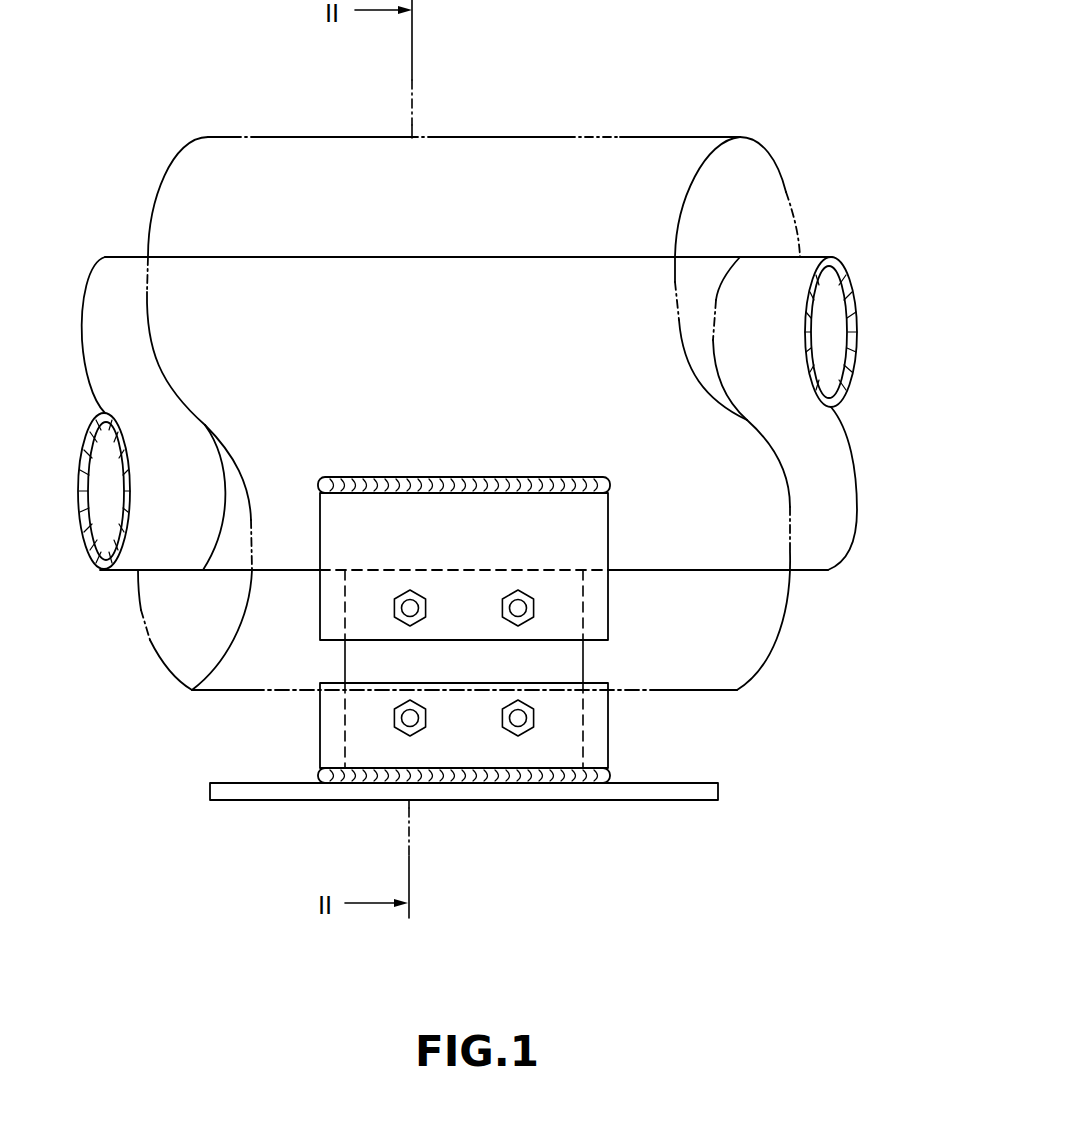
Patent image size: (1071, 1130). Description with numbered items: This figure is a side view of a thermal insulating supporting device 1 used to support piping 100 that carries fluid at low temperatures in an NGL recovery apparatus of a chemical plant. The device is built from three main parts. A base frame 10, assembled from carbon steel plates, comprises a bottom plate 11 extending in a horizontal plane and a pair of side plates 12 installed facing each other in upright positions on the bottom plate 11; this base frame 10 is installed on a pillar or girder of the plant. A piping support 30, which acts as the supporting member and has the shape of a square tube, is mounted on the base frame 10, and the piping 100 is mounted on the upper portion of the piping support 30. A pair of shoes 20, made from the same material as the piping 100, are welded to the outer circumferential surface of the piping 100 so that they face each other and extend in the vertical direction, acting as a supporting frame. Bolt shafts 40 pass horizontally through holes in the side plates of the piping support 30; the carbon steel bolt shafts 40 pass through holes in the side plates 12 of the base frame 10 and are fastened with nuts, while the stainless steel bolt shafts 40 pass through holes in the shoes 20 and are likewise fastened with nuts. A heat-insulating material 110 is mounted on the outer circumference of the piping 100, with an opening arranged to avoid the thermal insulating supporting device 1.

The thermal insulating supporting device 1 is at (196, 812).
The base frame 10 is at (628, 750).
The bottom plate 11 is at (645, 793).
The side plates 12 is at (478, 755).
The shoes 20 is at (628, 548).
The piping support 30 is at (328, 669).
The bolt shafts 40 is at (518, 606).
The piping 100 is at (815, 423).
The heat-insulating material 110 is at (575, 153).